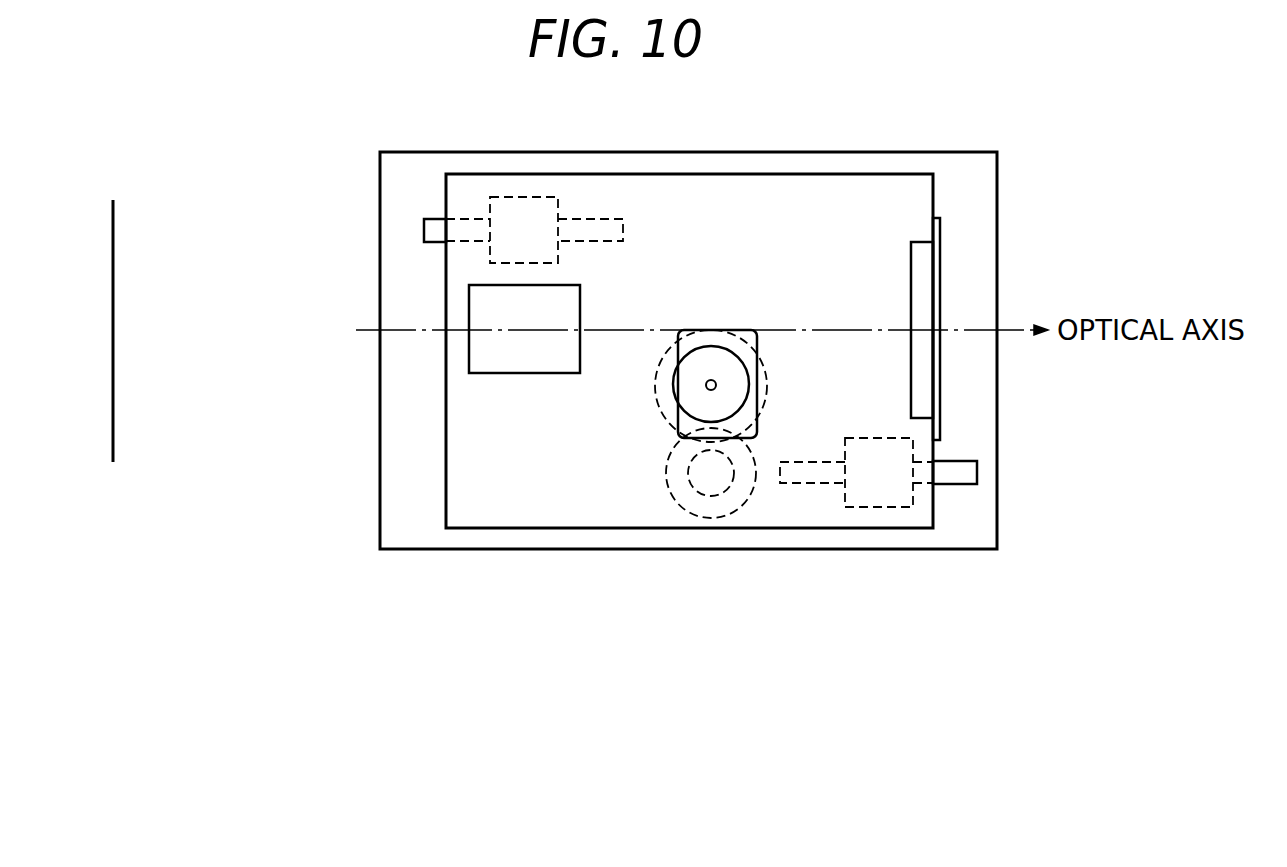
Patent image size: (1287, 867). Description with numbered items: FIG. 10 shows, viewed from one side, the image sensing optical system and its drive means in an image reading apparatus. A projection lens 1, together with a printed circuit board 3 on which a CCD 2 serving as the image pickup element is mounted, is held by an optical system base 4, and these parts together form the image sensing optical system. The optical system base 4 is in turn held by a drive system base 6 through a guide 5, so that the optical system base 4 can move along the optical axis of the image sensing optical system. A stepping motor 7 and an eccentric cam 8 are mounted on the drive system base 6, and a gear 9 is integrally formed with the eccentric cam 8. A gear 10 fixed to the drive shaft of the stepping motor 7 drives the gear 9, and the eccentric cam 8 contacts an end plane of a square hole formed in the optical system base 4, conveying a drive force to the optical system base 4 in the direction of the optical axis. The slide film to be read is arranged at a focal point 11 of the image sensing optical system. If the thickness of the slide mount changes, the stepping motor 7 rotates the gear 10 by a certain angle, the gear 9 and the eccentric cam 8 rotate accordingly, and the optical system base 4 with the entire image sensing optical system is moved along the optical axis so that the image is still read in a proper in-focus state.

The projection lens 1 is at (497, 353).
The CCD 2 is at (918, 271).
The printed circuit board 3 is at (940, 257).
The optical system base 4 is at (893, 200).
The guide 5 is at (434, 232).
The drive system base 6 is at (405, 465).
The stepping motor 7 is at (672, 487).
The eccentric cam 8 is at (726, 364).
The gear 9 is at (695, 340).
The gear 10 is at (733, 470).
The focal point 11 is at (114, 414).